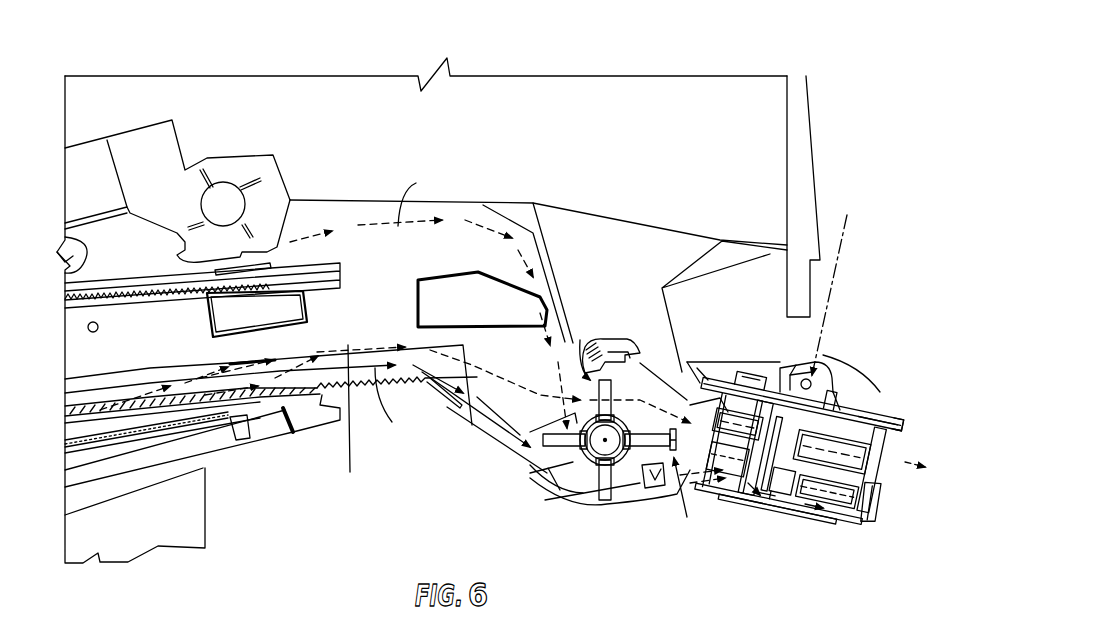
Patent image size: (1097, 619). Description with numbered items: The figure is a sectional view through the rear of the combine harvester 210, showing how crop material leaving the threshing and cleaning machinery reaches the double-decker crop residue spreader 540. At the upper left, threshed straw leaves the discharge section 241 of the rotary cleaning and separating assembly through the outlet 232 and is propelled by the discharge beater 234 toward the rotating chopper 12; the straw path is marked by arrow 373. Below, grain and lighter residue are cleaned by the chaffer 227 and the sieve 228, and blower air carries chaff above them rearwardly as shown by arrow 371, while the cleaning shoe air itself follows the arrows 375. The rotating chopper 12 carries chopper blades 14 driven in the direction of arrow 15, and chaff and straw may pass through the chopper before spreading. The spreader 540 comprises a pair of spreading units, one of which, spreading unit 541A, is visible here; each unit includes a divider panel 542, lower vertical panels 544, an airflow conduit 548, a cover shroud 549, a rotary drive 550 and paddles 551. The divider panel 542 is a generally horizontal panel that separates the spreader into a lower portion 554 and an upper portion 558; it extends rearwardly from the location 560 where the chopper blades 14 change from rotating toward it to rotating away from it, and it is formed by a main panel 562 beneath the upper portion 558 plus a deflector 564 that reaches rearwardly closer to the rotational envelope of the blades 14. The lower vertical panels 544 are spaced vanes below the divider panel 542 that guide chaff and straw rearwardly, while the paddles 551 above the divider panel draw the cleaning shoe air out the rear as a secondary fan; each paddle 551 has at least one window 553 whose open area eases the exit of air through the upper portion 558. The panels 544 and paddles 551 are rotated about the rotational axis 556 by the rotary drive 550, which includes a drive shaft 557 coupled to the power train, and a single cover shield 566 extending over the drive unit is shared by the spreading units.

The combine harvester 210 is at (185, 54).
The discharge section 241 is at (188, 130).
The discharge beater 234 is at (237, 170).
The outlet 232 is at (318, 208).
The arrow indicating straw flow 373 is at (487, 228).
The chaffer 227 is at (100, 405).
The arrows indicating cleaning shoe air flow 375 is at (347, 352).
The sieve 228 is at (108, 445).
The arrow indicating chaff flow 371 is at (487, 433).
The rotating chopper 12 is at (568, 345).
The arrow indicating chopper rotation direction 15 is at (583, 477).
The chopper blades 14 is at (551, 477).
The double-decker crop residue spreader 540 is at (860, 238).
The paddles 551 is at (720, 480).
The airflow conduit 548 is at (866, 458).
The divider panel 542 is at (855, 474).
The lower vertical panels 544 is at (765, 493).
The location of blade rotation transition 560 is at (690, 480).
The main panel 562 is at (792, 485).
The lower portion 554 is at (822, 525).
The upper portion 558 is at (732, 400).
The deflector 564 is at (726, 403).
The pivot axis 556 is at (842, 222).
The rotary drive 550 is at (820, 395).
The cover shield 566 is at (853, 397).
The drive shaft 557 is at (840, 410).
The window 553 is at (885, 405).
The spreading unit 541A is at (913, 422).
The cover shroud 549 is at (884, 430).